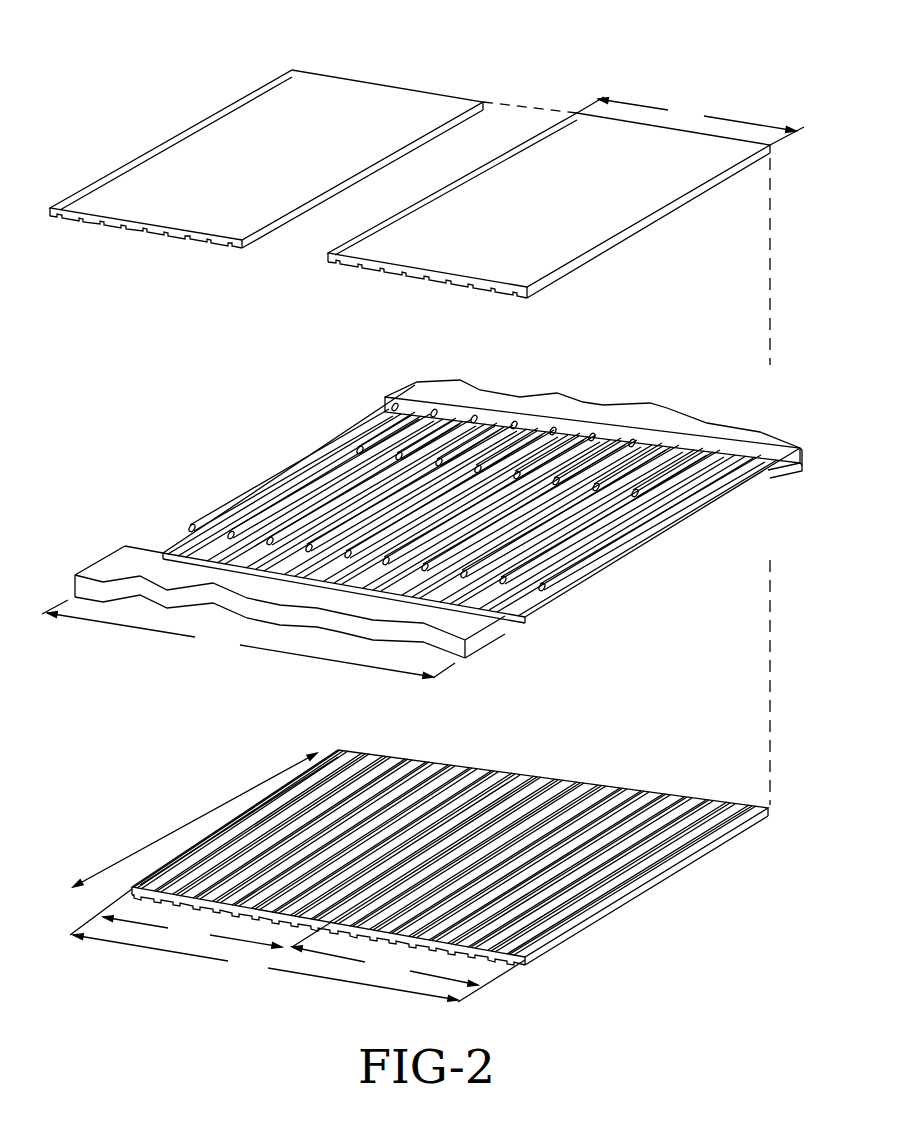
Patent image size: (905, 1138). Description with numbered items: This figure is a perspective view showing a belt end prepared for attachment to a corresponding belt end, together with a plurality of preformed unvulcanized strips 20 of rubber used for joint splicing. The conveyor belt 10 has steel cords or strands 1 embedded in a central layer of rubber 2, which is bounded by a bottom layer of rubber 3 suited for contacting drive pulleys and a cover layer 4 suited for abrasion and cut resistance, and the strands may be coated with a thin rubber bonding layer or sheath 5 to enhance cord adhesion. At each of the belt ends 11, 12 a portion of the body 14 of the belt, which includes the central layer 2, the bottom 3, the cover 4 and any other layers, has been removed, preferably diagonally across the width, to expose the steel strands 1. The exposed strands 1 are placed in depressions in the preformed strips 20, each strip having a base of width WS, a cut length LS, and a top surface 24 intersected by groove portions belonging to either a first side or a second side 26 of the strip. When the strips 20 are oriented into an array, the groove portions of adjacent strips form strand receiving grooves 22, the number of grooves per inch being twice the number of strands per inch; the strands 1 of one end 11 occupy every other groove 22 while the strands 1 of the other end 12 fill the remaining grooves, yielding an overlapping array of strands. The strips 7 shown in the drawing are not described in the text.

The steel cords or strands 1 is at (622, 540).
The central layer of rubber 2 is at (788, 478).
The bottom layer of rubber 3 is at (793, 478).
The cover layer 4 is at (787, 450).
The rubber bonding layer or sheath 5 is at (622, 540).
The strips 7 is at (386, 382).
The conveyor belt 10 is at (418, 368).
The belt end 11 is at (514, 430).
The belt end 12 is at (258, 552).
The body of the belt 14 is at (645, 418).
The preformed strip 20 is at (427, 518).
The strand receiving groove 22 is at (112, 228).
The top surface 24 is at (160, 237).
The second side 26 is at (215, 130).